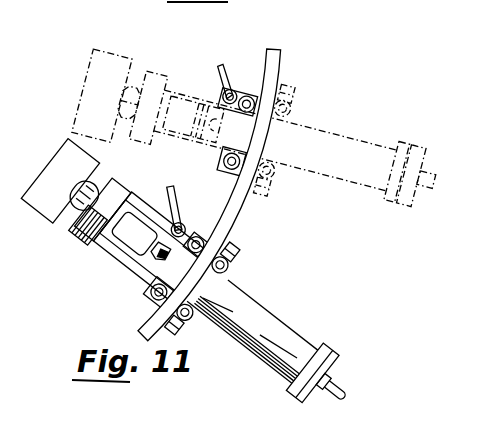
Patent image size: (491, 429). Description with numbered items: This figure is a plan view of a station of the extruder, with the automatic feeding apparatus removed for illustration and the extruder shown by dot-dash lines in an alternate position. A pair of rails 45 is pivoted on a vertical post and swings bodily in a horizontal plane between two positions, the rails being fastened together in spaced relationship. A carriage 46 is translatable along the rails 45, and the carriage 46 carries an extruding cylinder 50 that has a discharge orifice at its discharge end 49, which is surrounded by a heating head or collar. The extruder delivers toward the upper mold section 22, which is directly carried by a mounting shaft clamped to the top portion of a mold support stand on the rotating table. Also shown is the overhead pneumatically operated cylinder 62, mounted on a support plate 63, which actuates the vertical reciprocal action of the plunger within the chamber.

The upper mold section 22 is at (40, 215).
The rails 45 is at (242, 208).
The carriage 46 is at (302, 118).
The discharge end 49 is at (71, 221).
The extruding cylinder 50 is at (278, 316).
The pneumatically operated cylinder 62 is at (130, 213).
The support plate 63 is at (130, 250).